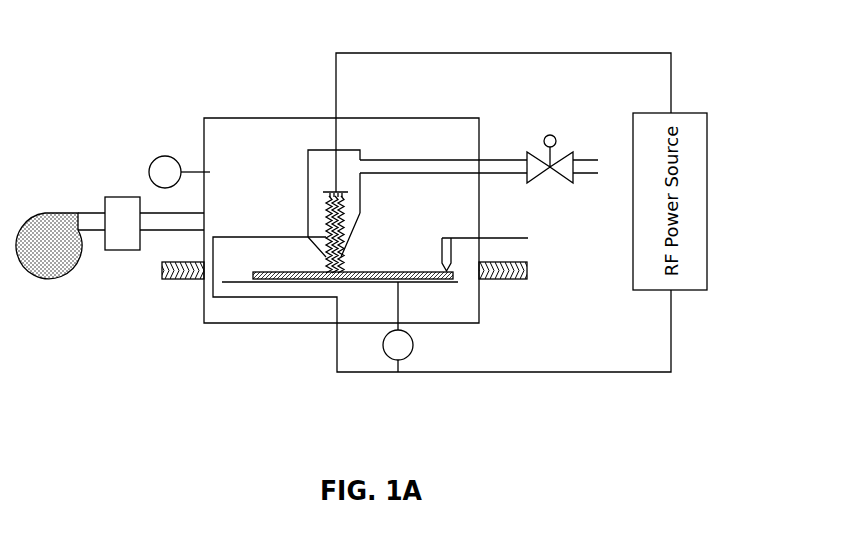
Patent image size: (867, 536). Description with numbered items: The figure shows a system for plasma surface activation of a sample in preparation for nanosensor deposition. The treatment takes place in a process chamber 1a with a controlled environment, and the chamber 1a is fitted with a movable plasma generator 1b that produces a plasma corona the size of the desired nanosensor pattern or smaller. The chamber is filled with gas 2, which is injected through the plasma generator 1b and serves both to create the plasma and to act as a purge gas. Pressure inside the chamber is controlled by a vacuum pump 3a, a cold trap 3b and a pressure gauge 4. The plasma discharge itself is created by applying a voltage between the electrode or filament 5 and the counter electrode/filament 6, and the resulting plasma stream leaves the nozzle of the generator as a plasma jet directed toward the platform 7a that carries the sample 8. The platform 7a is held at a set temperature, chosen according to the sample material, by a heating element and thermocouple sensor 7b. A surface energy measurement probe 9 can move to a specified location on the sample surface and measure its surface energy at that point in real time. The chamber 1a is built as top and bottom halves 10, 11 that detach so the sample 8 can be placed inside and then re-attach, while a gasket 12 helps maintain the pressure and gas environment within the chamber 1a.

The process chamber 1a is at (420, 118).
The movable plasma generator 1b is at (308, 148).
The gas 2 is at (585, 157).
The vacuum pump 3a is at (47, 213).
The cold trap 3b is at (110, 250).
The pressure gauge 4 is at (165, 156).
The electrode or filament 5 is at (338, 184).
The counter electrode/filament 6 is at (326, 237).
The platform 7a is at (432, 283).
The heating element and thermocouple sensor 7b is at (400, 373).
The sample 8 is at (272, 282).
The surface energy measurement probe 9 is at (452, 237).
The top half 10 is at (268, 118).
The bottom half 11 is at (300, 323).
The gasket 12 is at (527, 270).